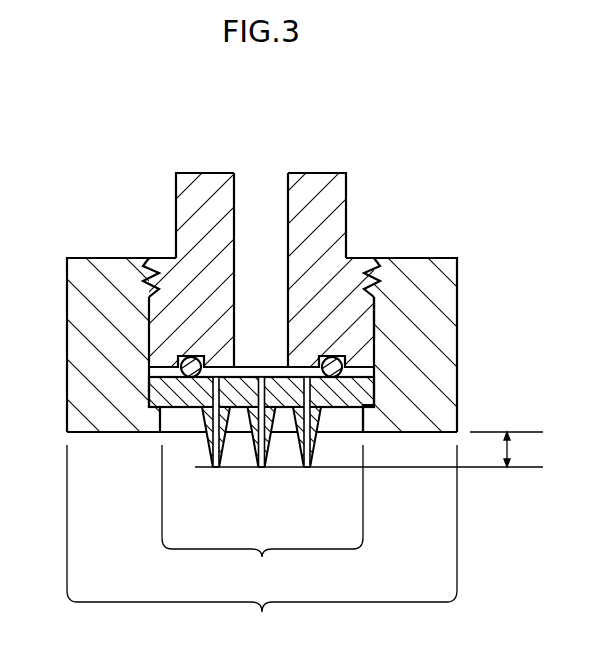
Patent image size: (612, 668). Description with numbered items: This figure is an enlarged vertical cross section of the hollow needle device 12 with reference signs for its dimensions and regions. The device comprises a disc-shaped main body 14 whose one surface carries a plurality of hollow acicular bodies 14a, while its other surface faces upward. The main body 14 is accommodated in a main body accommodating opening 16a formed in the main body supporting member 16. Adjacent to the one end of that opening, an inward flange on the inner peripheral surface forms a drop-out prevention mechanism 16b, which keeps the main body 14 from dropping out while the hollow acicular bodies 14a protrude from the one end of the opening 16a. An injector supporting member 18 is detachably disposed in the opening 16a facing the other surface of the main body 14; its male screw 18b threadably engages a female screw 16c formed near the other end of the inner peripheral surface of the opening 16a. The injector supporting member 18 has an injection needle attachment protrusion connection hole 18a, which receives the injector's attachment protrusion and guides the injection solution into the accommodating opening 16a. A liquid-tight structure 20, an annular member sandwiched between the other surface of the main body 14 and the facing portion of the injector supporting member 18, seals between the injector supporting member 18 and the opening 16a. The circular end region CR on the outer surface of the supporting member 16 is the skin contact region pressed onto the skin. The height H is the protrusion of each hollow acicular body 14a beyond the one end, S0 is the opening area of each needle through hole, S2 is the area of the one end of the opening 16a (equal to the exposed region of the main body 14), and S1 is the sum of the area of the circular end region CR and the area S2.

The hollow needle device 12 is at (458, 222).
The main body 14 is at (377, 383).
The hollow acicular bodies 14a is at (220, 458).
The main body supporting member 16 is at (452, 337).
The main body accommodating opening 16a is at (378, 308).
The drop-out prevention mechanism 16b is at (374, 422).
The female screw 16c is at (150, 297).
The injector supporting member 18 is at (338, 222).
The injection needle attachment protrusion connection hole 18a is at (247, 303).
The male screw 18b is at (378, 276).
The liquid-tight structure 20 is at (184, 370).
The circular end region (skin contact region) CR is at (425, 433).
The height of protrusion H is at (369, 449).
The opening area S0 is at (225, 460).
The sum total area S1 is at (262, 546).
The area of the one end S2 is at (262, 519).